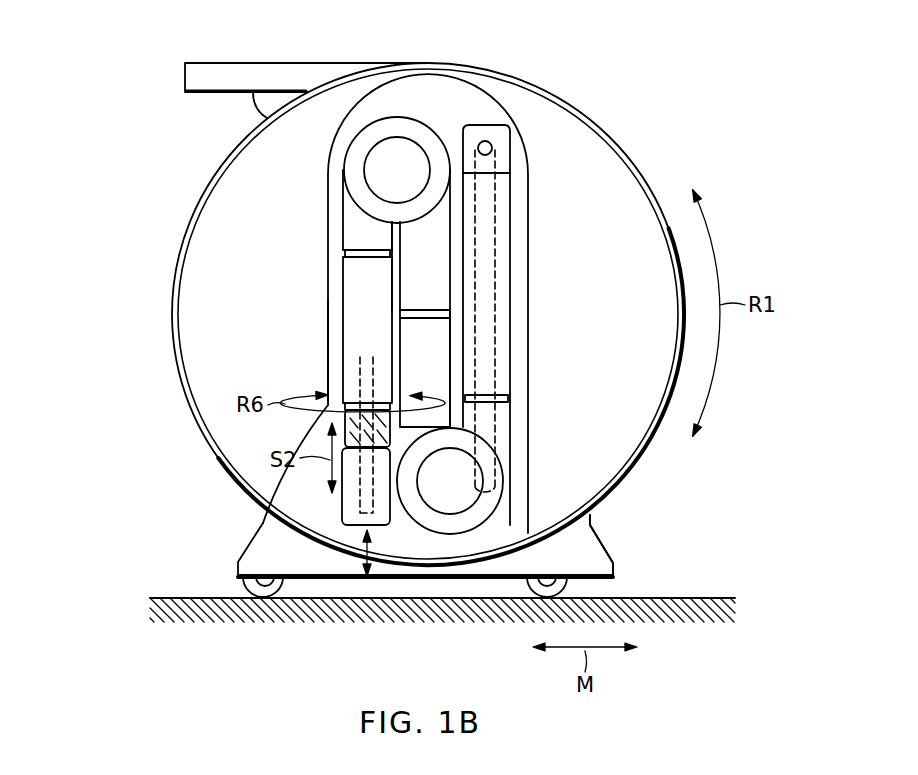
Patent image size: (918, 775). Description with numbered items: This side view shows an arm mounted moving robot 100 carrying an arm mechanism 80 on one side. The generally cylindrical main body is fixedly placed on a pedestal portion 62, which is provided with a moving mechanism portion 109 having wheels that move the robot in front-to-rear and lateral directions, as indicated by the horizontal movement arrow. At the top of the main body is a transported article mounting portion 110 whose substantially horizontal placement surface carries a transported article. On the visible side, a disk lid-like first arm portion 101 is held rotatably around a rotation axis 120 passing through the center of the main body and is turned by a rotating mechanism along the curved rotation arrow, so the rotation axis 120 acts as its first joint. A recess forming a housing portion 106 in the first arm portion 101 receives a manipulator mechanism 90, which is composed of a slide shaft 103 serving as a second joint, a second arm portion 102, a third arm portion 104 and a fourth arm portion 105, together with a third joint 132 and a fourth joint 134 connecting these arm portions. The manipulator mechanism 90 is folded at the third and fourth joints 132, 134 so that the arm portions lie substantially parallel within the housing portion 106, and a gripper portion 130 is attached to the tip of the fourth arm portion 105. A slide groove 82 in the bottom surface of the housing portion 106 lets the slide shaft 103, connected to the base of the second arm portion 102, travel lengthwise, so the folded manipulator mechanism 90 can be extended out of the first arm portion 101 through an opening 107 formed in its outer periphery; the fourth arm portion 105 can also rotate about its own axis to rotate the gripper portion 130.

The arm mechanism 80 is at (152, 250).
The arm mounted moving robot 100 is at (428, 341).
The first arm portion 101 is at (230, 178).
The transported article mounting portion 110 is at (212, 63).
The moving mechanism portion 109 is at (293, 550).
The pedestal portion 62 is at (597, 548).
The manipulator mechanism 90 is at (524, 297).
The housing portion 106 is at (333, 356).
The fourth joint 134 is at (403, 122).
The fourth arm portion 105 is at (352, 302).
The rotation axis 120 is at (425, 313).
The third arm portion 104 is at (438, 365).
The third joint 132 is at (478, 477).
The second arm portion 102 is at (500, 212).
The slide shaft 103 is at (490, 140).
The slide groove 82 is at (488, 332).
The gripper portion 130 is at (343, 506).
The opening 107 is at (418, 547).